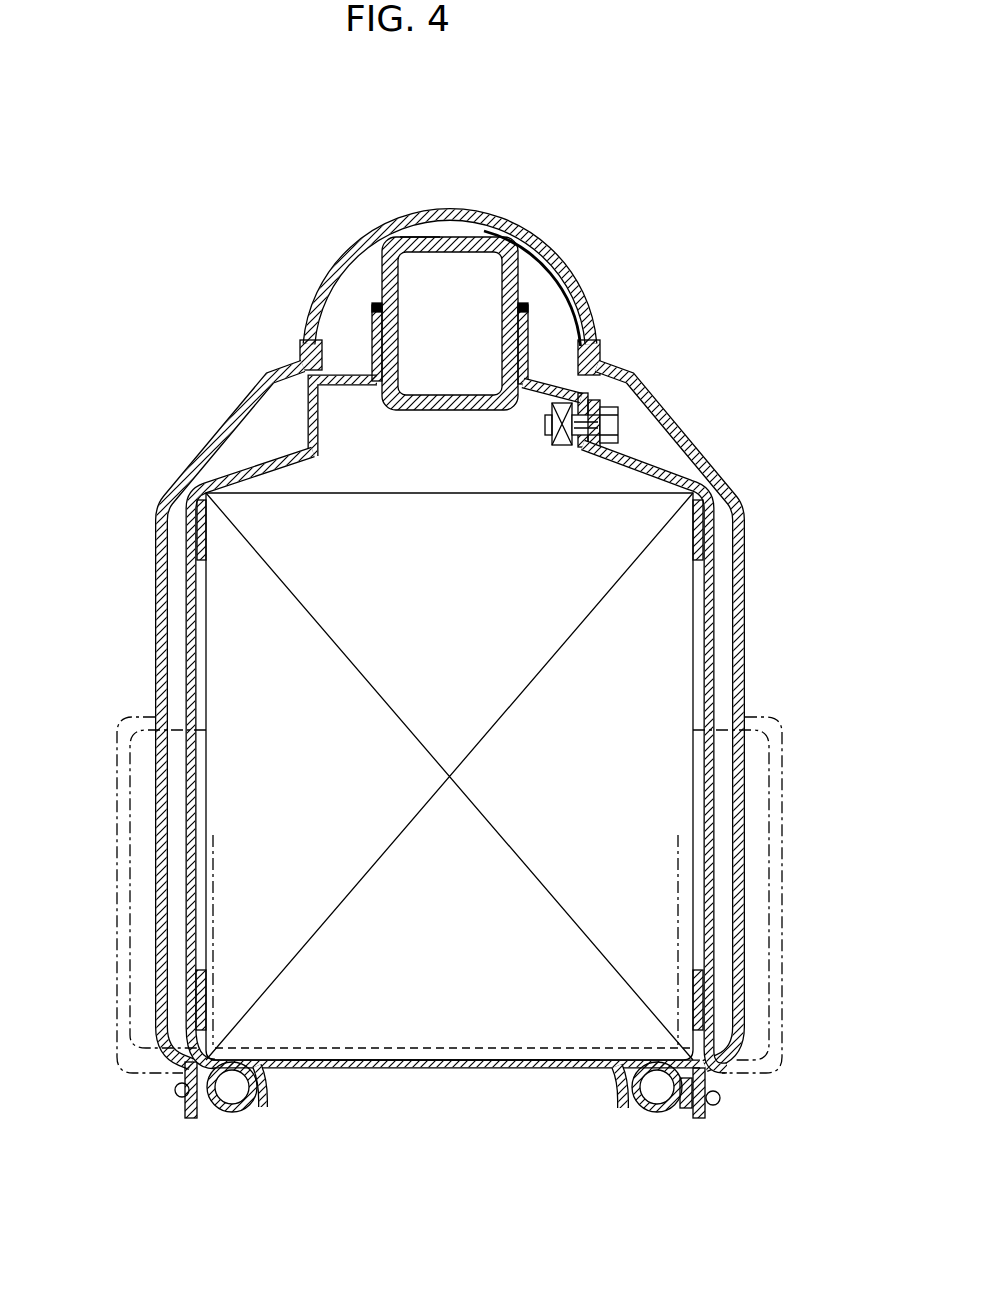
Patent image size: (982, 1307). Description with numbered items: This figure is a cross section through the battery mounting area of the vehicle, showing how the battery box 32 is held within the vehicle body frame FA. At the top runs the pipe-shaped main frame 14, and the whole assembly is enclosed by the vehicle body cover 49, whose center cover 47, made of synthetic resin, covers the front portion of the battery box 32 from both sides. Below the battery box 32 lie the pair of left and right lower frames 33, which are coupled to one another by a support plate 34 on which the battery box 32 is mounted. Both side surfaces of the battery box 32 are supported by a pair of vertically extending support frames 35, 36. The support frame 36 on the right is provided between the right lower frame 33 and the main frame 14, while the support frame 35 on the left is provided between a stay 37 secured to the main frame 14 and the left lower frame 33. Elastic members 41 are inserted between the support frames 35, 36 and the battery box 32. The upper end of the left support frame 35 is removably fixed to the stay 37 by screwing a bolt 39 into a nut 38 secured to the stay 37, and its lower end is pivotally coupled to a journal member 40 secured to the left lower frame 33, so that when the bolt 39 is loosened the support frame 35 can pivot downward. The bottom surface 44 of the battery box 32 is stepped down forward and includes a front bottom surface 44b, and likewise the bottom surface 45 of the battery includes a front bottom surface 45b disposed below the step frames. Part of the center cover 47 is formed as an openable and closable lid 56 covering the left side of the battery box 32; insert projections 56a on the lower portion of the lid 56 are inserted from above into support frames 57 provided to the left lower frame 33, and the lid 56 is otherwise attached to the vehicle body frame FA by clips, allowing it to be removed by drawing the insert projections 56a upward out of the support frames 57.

The main frame 14 is at (512, 290).
The battery box 32 is at (427, 734).
The lower frame 33 is at (230, 1110).
The support plate 34 is at (437, 1069).
The support frame 35 is at (710, 648).
The support frame 36 is at (165, 690).
The stay 37 is at (555, 385).
The nut 38 is at (558, 440).
The bolt 39 is at (614, 425).
The journal member 40 is at (690, 1002).
The elastic member 41 is at (198, 545).
The bottom surface 44 is at (494, 1062).
The front bottom surface 44b is at (548, 1069).
The bottom surface 45 is at (295, 1061).
The front bottom surface 45b is at (385, 1050).
The center cover 47 is at (446, 209).
The vehicle body cover 49 is at (450, 238).
The lid 56 is at (742, 712).
The insert projection 56a is at (700, 1120).
The support frame 57 is at (722, 1100).
The vehicle body frame FA is at (405, 239).